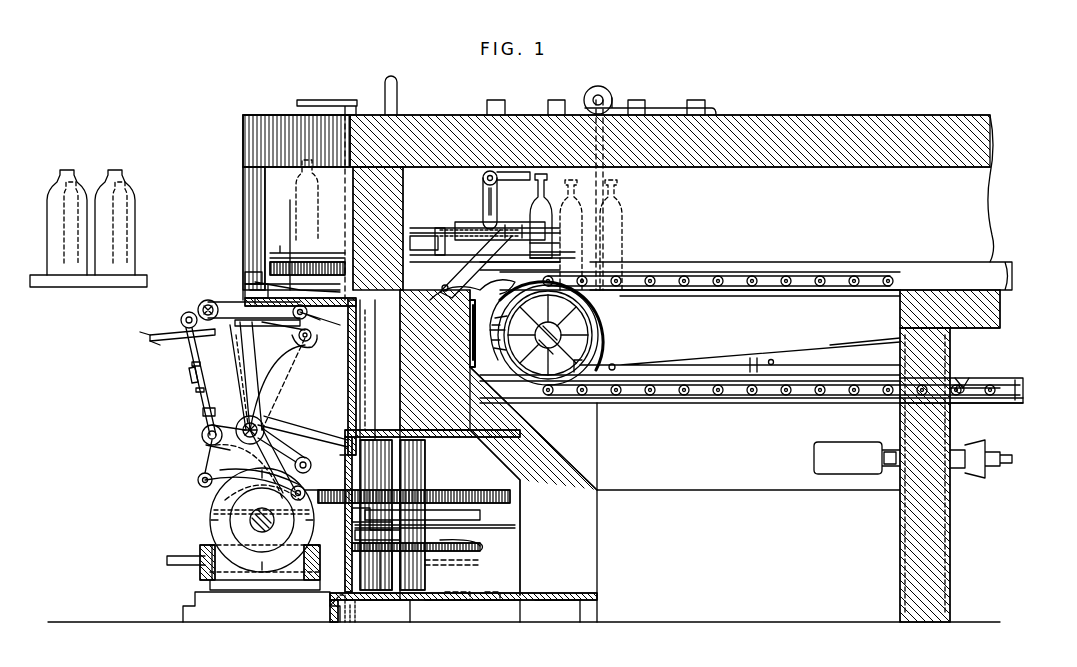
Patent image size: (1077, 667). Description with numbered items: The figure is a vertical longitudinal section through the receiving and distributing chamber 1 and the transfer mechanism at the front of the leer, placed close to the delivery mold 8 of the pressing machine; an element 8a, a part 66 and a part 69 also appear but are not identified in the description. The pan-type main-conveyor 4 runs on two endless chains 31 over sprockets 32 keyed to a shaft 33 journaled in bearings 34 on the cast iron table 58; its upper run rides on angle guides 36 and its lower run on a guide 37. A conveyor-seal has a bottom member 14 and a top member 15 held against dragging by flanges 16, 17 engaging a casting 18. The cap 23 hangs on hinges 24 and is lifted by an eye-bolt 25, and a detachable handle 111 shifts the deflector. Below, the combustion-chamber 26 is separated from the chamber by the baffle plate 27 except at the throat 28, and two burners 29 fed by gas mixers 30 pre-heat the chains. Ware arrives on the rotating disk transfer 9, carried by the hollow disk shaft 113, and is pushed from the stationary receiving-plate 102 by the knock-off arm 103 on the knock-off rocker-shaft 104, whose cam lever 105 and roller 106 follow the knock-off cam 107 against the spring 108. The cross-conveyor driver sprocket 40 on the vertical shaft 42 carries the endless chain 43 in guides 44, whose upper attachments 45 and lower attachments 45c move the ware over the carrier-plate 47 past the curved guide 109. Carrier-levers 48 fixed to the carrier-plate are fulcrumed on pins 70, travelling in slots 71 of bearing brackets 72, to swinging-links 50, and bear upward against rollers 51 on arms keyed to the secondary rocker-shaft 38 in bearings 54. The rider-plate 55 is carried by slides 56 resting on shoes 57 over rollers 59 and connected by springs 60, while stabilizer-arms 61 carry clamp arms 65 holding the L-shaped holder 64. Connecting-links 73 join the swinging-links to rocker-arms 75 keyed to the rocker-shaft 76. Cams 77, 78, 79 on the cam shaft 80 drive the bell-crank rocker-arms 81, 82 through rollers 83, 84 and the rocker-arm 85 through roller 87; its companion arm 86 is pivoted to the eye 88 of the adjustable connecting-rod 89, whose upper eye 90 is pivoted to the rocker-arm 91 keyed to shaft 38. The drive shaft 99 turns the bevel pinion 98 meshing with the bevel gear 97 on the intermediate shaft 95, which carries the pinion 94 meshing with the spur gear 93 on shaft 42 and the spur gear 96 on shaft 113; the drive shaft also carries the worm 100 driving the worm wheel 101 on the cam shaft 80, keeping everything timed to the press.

The receiving and distributing chamber 1 is at (621, 361).
The main-conveyor 4 is at (640, 282).
The delivery mold 8 is at (128, 190).
The carrier base plate 8a is at (75, 288).
The disk transfer 9 is at (262, 262).
The conveyor-seal bottom member 14 is at (953, 408).
The conveyor-seal top member 15 is at (975, 387).
The upward extending flange 16 is at (963, 383).
The upward extending flange 17 is at (892, 360).
The casting 18 is at (935, 375).
The cap 23 is at (262, 114).
The hinges 24 is at (606, 96).
The eye-bolt 25 is at (397, 90).
The combustion-chamber 26 is at (748, 446).
The baffle plate 27 is at (737, 357).
The throat 28 is at (485, 339).
The burners 29 is at (857, 458).
The gas mixers 30 is at (978, 468).
The endless chains 31 is at (680, 294).
The sprockets 32 is at (600, 338).
The shaft 33 is at (562, 338).
The bearings 34 is at (598, 312).
The angle guides 36 is at (801, 276).
The guide 37 is at (1025, 386).
The secondary rocker-shaft 38 is at (200, 304).
The driver sprocket 40 is at (503, 222).
The cross-conveyor drive shaft 42 is at (500, 408).
The endless chain 43 is at (440, 228).
The guides 44 is at (530, 232).
The attachment 45 is at (414, 228).
The attachment 45c is at (535, 242).
The carrier-plate 47 is at (535, 268).
The carrier-levers 48 is at (135, 345).
The swinging-link 50 is at (258, 278).
The rollers 51 is at (162, 335).
The bearings 54 is at (234, 376).
The rider-plate 55 is at (540, 252).
The slides 56 is at (260, 272).
The shoes 57 is at (312, 345).
The cast iron table 58 is at (372, 370).
The rollers 59 is at (250, 290).
The springs 60 is at (246, 278).
The stabilizer-arms 61 is at (462, 229).
The L-shaped holder 64 is at (540, 172).
The clamp arms 65 is at (490, 170).
The connecting link 66 is at (495, 228).
The link 69 is at (280, 342).
The pins 70 is at (300, 345).
The slots 71 is at (277, 387).
The bearing brackets 72 is at (303, 410).
The connecting-link 73 is at (268, 302).
The rocker-arms 75 is at (244, 378).
The rocker-shaft 76 is at (262, 426).
The cam 77 is at (262, 520).
The cam 78 is at (218, 495).
The cam 79 is at (245, 512).
The cam shaft 80 is at (252, 522).
The double bell-crank rocker-arm 81 is at (215, 450).
The double bell-crank rocker-arm 82 is at (280, 440).
The roller 83 is at (198, 482).
The roller 84 is at (312, 465).
The rocker-arm 85 is at (280, 480).
The rocker-arm 86 is at (202, 430).
The roller 87 is at (308, 489).
The eye 88 is at (203, 412).
The connecting-rod 89 is at (194, 370).
The eye 90 is at (186, 338).
The rocker-arm 91 is at (181, 316).
The spur gear 93 is at (494, 490).
The pinion 94 is at (415, 498).
The intermediate shaft 95 is at (430, 572).
The spur gear 96 is at (370, 490).
The bevel gear 97 is at (470, 540).
The bevel pinion 98 is at (352, 608).
The drive shaft 99 is at (178, 556).
The worm 100 is at (200, 580).
The worm wheel 101 is at (261, 607).
The stationary receiving-plate 102 is at (300, 262).
The knock-off arm 103 is at (340, 250).
The knock-off rocker-shaft 104 is at (378, 540).
The cam lever 105 is at (358, 515).
The roller 106 is at (370, 526).
The knock-off cam 107 is at (440, 518).
The spring 108 is at (384, 571).
The curved guide 109 is at (610, 240).
The detachable handle 111 is at (328, 100).
The hollow disk shaft 113 is at (348, 402).